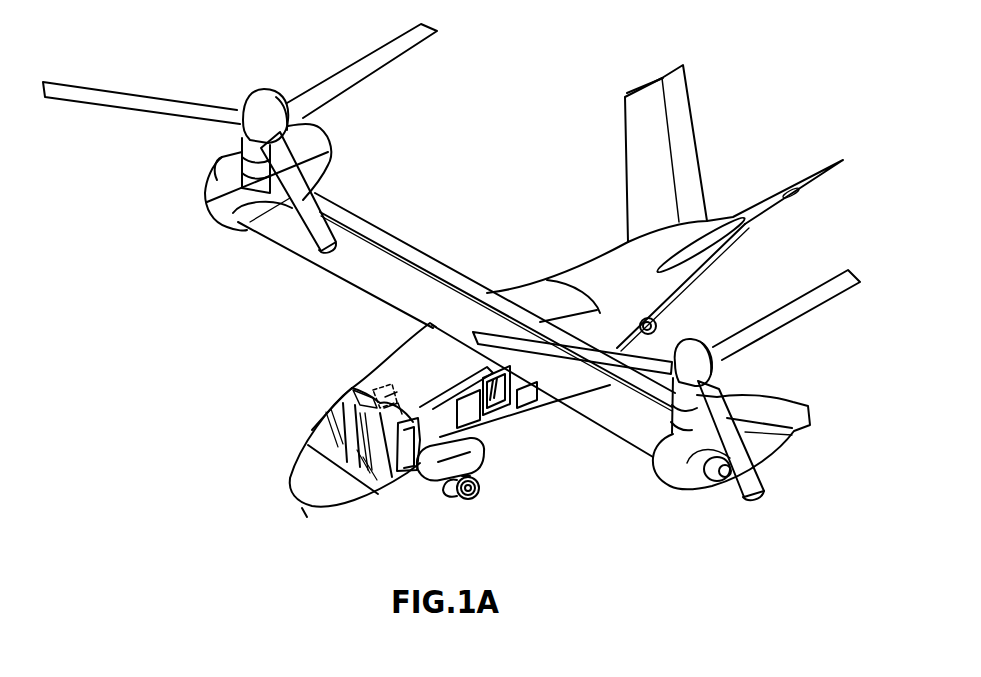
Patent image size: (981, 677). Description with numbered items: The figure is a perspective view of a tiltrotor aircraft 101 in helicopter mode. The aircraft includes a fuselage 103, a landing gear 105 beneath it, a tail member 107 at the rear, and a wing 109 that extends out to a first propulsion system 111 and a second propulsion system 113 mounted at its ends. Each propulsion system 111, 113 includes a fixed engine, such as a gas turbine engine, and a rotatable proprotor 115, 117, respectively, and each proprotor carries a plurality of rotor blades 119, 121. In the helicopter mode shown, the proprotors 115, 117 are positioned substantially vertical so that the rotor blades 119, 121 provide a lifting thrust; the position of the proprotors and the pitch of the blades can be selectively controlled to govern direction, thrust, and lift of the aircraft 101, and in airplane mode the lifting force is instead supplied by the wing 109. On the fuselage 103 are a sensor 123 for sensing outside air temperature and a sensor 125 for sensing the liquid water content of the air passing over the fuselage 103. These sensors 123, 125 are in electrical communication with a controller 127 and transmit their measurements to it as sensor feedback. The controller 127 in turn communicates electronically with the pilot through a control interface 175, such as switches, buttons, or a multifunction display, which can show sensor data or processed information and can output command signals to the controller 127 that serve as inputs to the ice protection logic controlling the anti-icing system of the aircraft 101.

The tiltrotor aircraft 101 is at (736, 57).
The fuselage 103 is at (342, 510).
The landing gear 105 is at (478, 494).
The tail member 107 is at (694, 118).
The wing 109 is at (583, 422).
The first propulsion system 111 is at (657, 505).
The second propulsion system 113 is at (196, 139).
The rotatable proprotor 115 is at (716, 378).
The rotatable proprotor 117 is at (262, 92).
The rotor blades 119 is at (838, 298).
The rotor blades 121 is at (352, 66).
The sensor 123 is at (356, 381).
The sensor 125 is at (395, 405).
The controller 127 is at (393, 392).
The control interface 175 is at (400, 388).